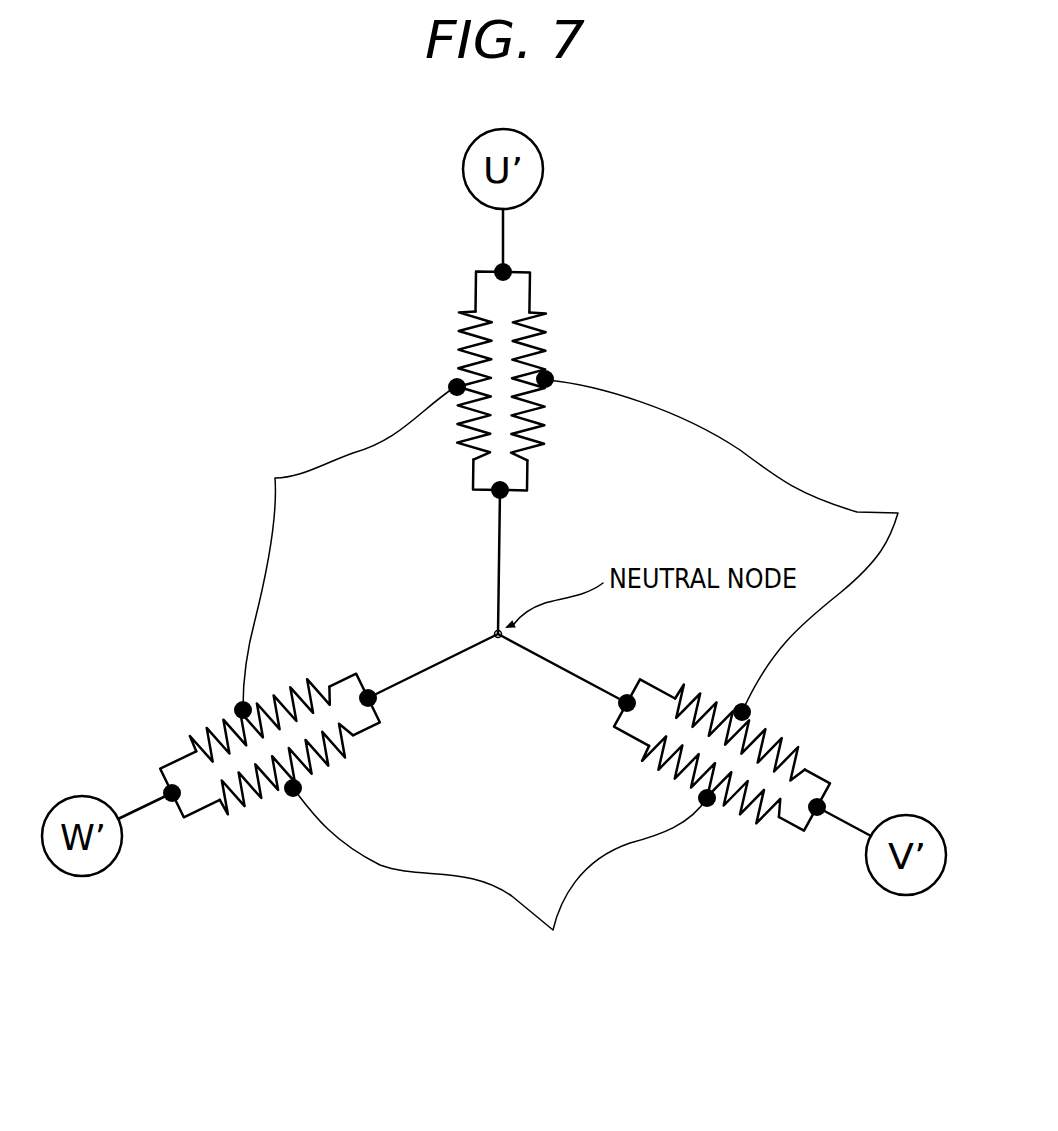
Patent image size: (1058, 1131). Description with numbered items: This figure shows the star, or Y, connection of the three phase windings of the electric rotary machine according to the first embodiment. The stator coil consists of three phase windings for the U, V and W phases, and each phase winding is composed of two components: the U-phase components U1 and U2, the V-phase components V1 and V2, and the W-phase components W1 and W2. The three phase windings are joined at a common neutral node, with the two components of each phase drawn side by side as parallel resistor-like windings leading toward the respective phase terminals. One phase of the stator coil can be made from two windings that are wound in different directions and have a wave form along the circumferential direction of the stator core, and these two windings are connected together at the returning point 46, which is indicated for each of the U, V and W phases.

The returning point 46 is at (585, 671).
The U-phase winding component U1 is at (565, 340).
The U-phase winding component U2 is at (438, 340).
The V-phase winding component V1 is at (723, 831).
The V-phase winding component V2 is at (792, 720).
The W-phase winding component W1 is at (205, 708).
The W-phase winding component W2 is at (265, 828).